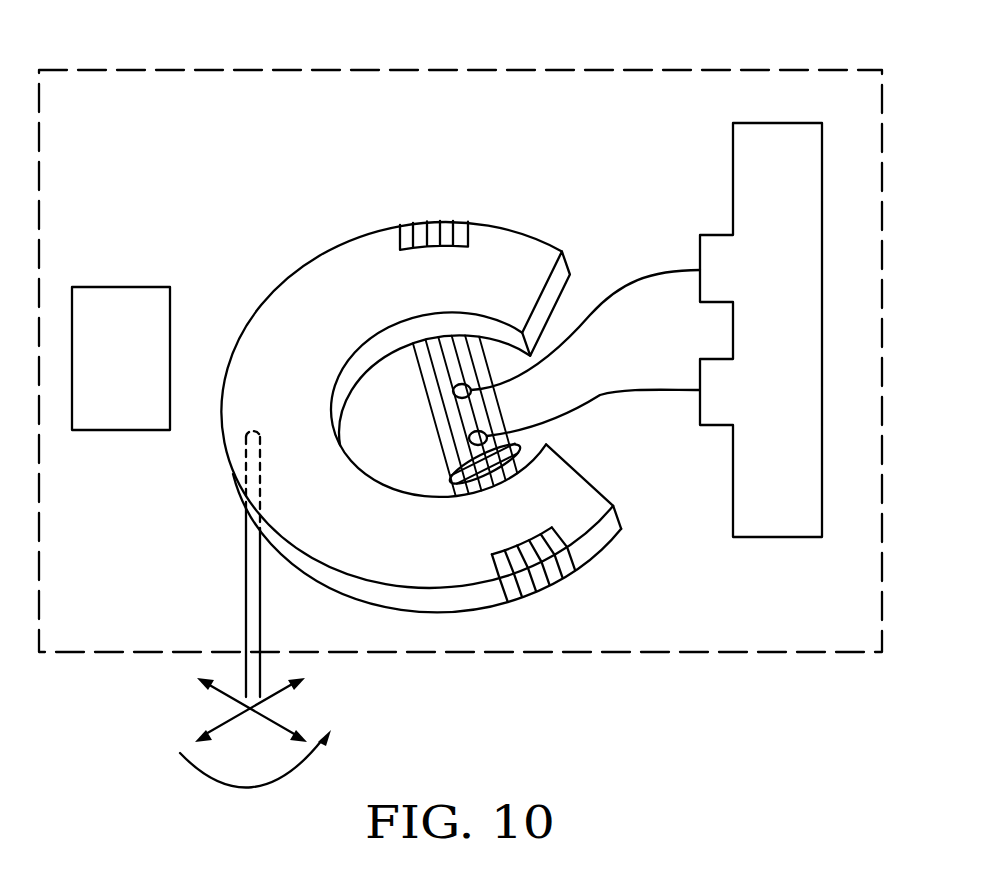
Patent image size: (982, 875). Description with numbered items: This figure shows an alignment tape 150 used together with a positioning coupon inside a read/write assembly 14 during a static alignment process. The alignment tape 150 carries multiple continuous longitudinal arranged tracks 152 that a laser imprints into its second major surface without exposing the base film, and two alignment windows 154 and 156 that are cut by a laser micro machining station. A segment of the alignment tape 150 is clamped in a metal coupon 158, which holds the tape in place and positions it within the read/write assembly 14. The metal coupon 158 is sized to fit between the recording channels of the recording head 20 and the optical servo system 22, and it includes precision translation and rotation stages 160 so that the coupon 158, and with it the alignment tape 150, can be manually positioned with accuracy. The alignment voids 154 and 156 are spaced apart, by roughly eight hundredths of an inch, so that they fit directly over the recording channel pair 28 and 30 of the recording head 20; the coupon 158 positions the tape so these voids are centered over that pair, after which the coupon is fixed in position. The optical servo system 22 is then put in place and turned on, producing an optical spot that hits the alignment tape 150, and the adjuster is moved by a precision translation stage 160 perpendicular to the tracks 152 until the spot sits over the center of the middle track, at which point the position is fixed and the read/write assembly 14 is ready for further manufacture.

The read/write assembly 14 is at (457, 70).
The recording head 20 is at (727, 134).
The optical servo system 22 is at (104, 287).
The recording channel 28 is at (717, 235).
The recording channel 30 is at (715, 425).
The alignment tape 150 is at (437, 418).
The continuous longitudinal arranged tracks 152 is at (522, 446).
The alignment window 154 is at (453, 391).
The alignment window 156 is at (452, 457).
The metal coupon 158 is at (333, 278).
The precision translation and rotation stages 160 is at (246, 574).